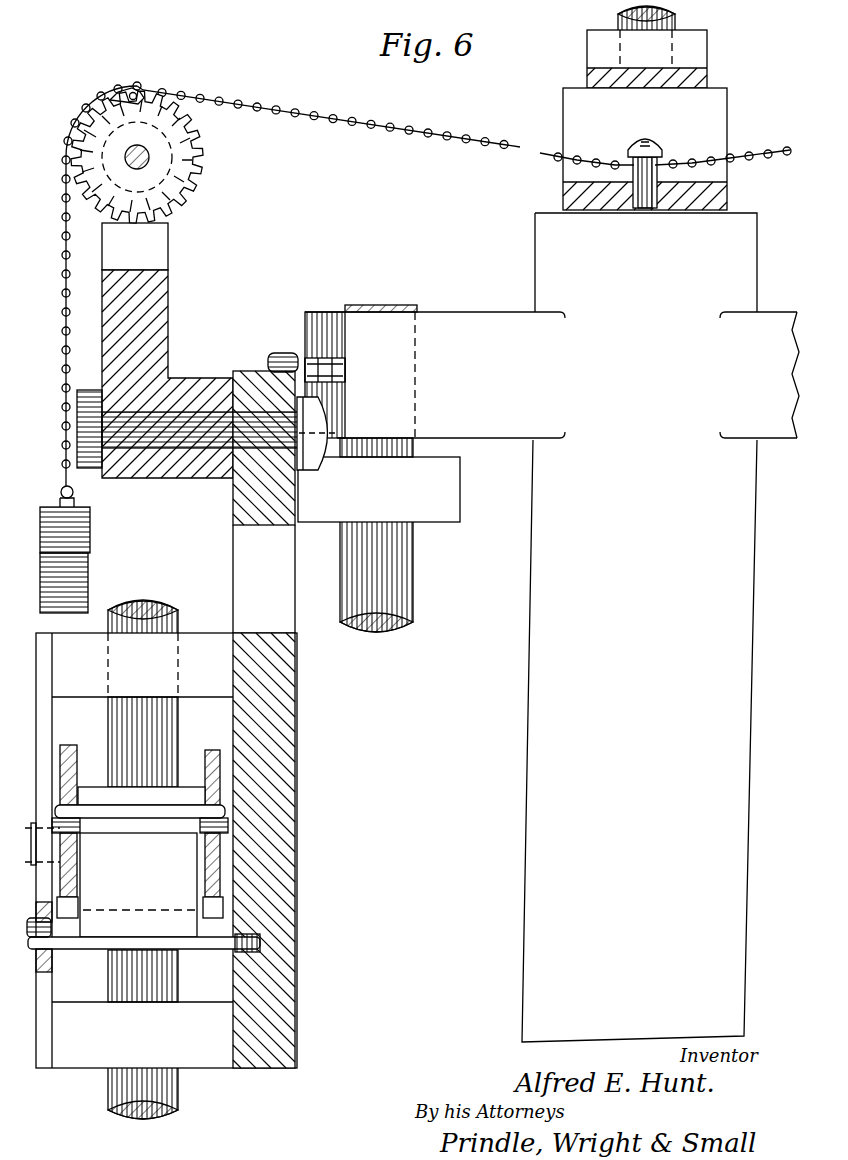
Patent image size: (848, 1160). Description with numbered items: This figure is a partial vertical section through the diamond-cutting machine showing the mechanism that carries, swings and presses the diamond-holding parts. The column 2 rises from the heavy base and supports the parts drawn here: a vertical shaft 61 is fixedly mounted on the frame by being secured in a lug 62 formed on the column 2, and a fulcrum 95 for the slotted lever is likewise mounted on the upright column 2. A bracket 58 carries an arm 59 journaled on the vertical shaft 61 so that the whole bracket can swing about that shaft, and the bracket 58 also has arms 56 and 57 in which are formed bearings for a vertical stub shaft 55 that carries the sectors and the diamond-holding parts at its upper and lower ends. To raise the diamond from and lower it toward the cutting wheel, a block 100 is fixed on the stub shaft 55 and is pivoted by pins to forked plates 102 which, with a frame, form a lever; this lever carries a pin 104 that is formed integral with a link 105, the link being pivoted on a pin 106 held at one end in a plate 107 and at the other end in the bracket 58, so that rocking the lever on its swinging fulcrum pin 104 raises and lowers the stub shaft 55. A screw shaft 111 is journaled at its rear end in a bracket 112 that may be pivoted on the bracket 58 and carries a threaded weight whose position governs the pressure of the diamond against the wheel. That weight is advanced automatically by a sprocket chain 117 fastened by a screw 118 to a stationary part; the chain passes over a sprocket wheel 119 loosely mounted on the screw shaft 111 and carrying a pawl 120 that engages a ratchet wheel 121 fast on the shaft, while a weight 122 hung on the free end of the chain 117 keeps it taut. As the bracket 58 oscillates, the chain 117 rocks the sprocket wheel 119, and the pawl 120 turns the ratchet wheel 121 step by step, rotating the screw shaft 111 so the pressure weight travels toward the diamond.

The column 2 is at (735, 756).
The vertical stub shaft 55 is at (178, 624).
The arm 56 is at (236, 640).
The arm 57 is at (192, 1056).
The bracket 58 is at (280, 710).
The arm 59 is at (448, 498).
The vertical shaft 61 is at (412, 598).
The lug 62 is at (460, 326).
The fulcrum 95 is at (677, 20).
The block 100 is at (178, 798).
The forked plates 102 is at (68, 748).
The pin 104 is at (220, 815).
The link 105 is at (178, 870).
The pin 106 is at (208, 928).
The plate 107 is at (42, 986).
The screw shaft 111 is at (152, 172).
The bracket 112 is at (160, 250).
The sprocket chain 117 is at (388, 124).
The screw 118 is at (650, 152).
The sprocket wheel 119 is at (200, 148).
The pawl 120 is at (132, 92).
The ratchet wheel 121 is at (163, 123).
The weight 122 is at (76, 578).